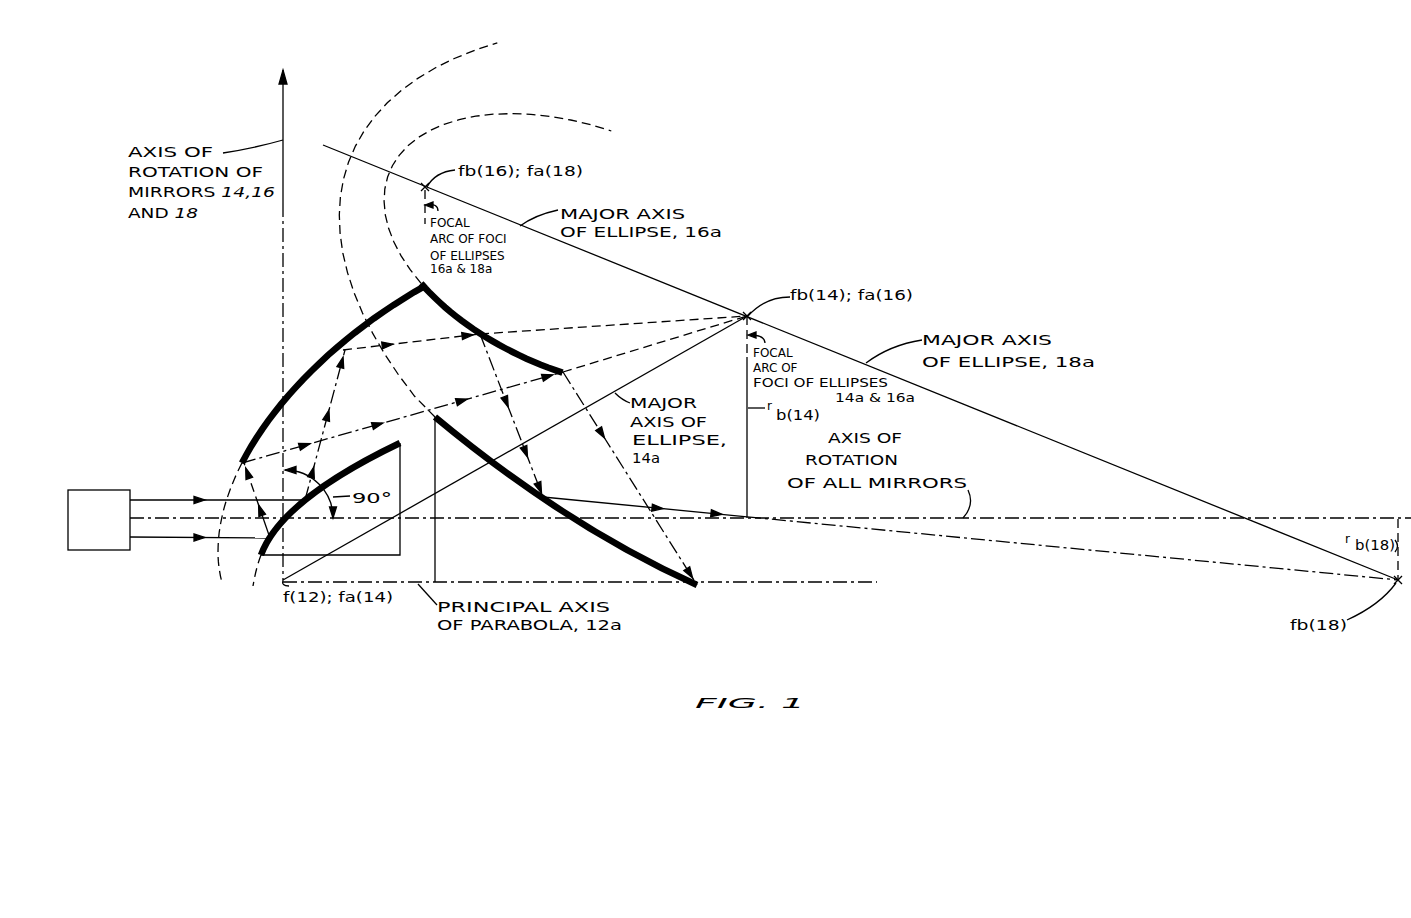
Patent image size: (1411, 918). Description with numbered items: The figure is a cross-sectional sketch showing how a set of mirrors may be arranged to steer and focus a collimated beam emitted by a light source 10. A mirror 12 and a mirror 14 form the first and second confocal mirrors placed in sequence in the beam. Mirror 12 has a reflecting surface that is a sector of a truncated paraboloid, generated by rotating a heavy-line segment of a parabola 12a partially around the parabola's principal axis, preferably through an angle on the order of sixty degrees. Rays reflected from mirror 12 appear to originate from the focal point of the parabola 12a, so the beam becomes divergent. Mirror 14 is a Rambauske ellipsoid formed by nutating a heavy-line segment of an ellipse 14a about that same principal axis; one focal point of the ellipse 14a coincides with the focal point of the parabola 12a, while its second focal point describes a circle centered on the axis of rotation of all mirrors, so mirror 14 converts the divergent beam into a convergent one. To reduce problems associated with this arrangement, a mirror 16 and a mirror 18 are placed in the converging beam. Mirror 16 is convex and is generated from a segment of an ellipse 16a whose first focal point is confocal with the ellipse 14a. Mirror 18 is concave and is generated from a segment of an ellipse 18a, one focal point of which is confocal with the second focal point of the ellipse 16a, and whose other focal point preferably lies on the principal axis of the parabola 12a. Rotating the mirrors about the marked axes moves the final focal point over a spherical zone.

The light source 10 is at (97, 490).
The mirror 12 is at (259, 556).
The parabola 12a is at (265, 580).
The mirror 14 is at (266, 425).
The ellipse 14a is at (226, 478).
The mirror 16 is at (507, 340).
The ellipse 16a is at (510, 113).
The mirror 18 is at (590, 533).
The ellipse 18a is at (428, 80).